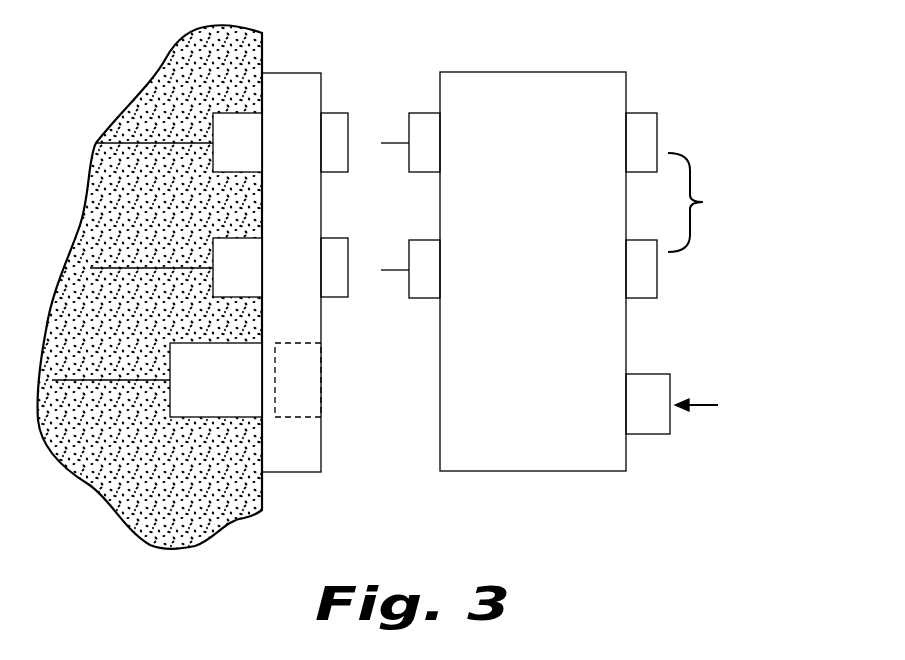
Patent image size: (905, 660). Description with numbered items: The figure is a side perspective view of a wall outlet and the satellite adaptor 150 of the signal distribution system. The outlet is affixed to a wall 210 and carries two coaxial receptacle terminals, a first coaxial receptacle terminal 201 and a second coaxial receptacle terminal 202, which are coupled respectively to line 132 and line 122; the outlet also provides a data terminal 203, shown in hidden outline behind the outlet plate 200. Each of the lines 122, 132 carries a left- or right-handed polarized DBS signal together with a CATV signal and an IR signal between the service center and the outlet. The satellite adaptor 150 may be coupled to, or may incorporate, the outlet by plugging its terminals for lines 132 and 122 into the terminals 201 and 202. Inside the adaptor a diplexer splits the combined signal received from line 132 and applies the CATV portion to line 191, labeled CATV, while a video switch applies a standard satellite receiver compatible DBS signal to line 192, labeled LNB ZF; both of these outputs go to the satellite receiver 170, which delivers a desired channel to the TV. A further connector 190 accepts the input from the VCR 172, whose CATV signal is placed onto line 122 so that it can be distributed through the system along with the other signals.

The line 122 is at (126, 267).
The line 132 is at (138, 143).
The satellite adaptor 150 is at (555, 472).
The satellite receiver 170 is at (741, 210).
The VCR 172 is at (759, 399).
The VCR input connector 190 is at (660, 434).
The line 191 is at (652, 300).
The line 192 is at (640, 112).
The wall panel 200 is at (298, 472).
The coaxial receptacle terminal 201 is at (345, 112).
The coaxial receptacle terminal 202 is at (347, 238).
The data terminal 203 is at (307, 388).
The wall 210 is at (108, 488).